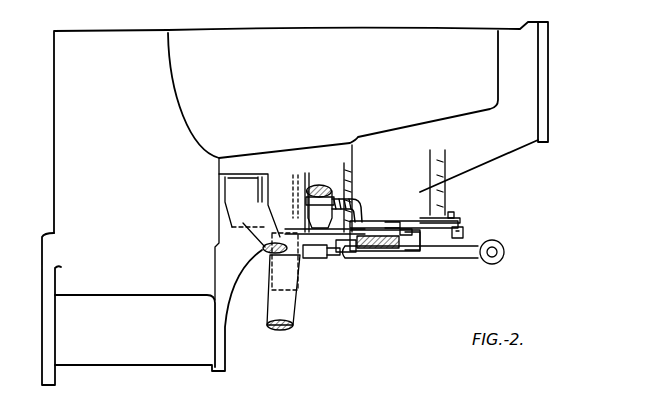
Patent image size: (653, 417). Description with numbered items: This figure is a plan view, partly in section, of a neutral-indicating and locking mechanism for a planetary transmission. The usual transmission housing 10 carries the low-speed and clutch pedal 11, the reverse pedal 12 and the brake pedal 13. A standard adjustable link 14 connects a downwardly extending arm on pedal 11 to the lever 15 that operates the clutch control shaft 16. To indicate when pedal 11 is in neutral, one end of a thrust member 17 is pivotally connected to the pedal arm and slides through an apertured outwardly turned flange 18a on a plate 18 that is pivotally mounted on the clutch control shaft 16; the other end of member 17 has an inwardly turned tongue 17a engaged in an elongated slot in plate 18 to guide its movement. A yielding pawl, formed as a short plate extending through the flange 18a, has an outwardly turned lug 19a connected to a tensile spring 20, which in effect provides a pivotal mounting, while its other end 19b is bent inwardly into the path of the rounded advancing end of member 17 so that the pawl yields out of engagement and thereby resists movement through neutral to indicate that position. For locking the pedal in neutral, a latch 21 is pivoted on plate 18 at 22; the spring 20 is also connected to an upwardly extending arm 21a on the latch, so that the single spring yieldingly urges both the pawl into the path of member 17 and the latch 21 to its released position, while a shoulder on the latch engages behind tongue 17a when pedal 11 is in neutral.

The housing 10 is at (125, 357).
The low-speed and clutch pedal 11 is at (298, 311).
The reverse pedal 12 is at (262, 246).
The brake pedal 13 is at (324, 185).
The adjustable link 14 is at (309, 258).
The lever 15 is at (463, 253).
The clutch control shaft 16 is at (438, 214).
The thrust member 17 is at (350, 255).
The inwardly turned tongue 17a is at (362, 214).
The plate 18 is at (390, 217).
The apertured outwardly turned flange 18a is at (380, 249).
The outwardly turned lug 19a is at (372, 251).
The inwardly bent end of pawl 19b is at (414, 230).
The tensile spring 20 is at (398, 241).
The latch 21 is at (404, 215).
The upwardly extending arm 21a is at (467, 230).
The pivot 22 is at (452, 219).